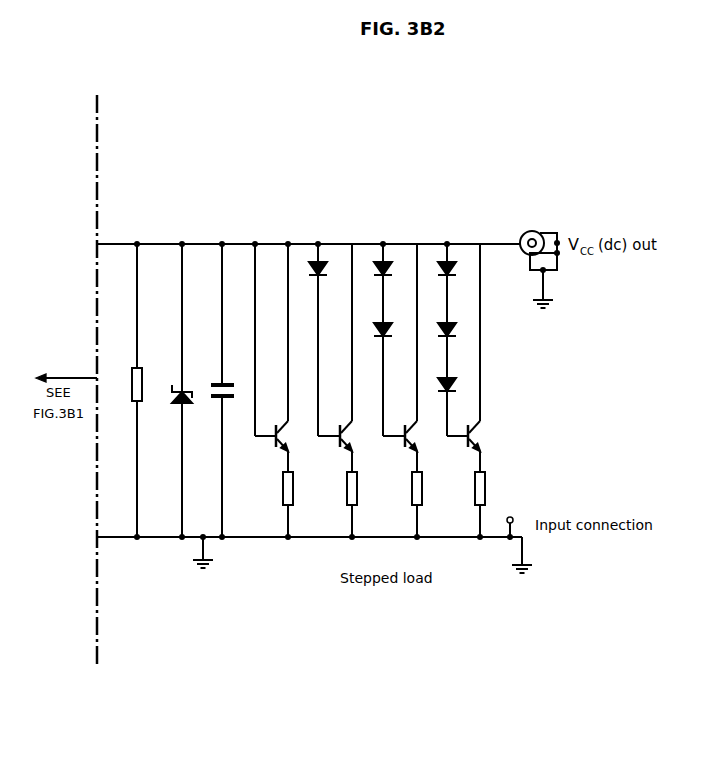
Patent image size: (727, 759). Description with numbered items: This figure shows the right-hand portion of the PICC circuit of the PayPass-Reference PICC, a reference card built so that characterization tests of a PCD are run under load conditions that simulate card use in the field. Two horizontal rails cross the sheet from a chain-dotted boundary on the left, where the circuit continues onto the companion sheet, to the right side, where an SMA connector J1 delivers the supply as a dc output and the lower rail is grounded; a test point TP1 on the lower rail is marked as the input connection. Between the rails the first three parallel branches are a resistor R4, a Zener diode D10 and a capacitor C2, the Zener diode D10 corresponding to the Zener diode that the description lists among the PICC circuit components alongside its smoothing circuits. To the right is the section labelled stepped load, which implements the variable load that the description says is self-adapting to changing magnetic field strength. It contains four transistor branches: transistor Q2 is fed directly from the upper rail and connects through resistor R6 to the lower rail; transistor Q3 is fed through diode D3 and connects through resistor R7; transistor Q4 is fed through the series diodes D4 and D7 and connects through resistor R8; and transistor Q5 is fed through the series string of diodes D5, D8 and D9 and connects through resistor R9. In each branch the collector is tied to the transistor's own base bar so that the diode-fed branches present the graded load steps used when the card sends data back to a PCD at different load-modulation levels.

The resistor R4 is at (125, 390).
The zener diode D10 is at (172, 390).
The capacitor C2 is at (216, 390).
The diode D3 is at (326, 340).
The diode D4 is at (390, 283).
The diode D7 is at (390, 379).
The diode D5 is at (454, 283).
The diode D8 is at (454, 350).
The diode D9 is at (455, 407).
The transistor Q2 is at (276, 404).
The transistor Q3 is at (339, 404).
The transistor Q4 is at (405, 402).
The transistor Q5 is at (469, 404).
The resistor R6 is at (300, 504).
The resistor R7 is at (364, 504).
The resistor R8 is at (428, 504).
The resistor R9 is at (492, 504).
The test point TP1 (input connection) TP1 is at (514, 518).
The SMA connector J1 (Vcc dc out) J1 is at (531, 269).